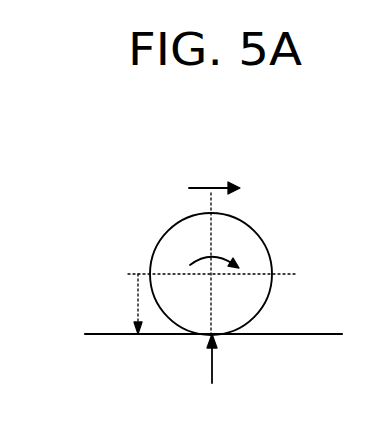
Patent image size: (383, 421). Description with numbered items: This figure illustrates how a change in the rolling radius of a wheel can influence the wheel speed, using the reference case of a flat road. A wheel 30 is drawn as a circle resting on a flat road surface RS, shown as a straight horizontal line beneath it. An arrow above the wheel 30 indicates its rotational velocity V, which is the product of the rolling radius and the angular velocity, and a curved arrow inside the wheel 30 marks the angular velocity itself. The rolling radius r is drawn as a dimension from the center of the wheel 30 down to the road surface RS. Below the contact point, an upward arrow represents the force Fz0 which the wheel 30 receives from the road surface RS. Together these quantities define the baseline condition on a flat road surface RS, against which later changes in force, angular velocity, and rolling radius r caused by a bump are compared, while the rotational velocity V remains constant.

The wheel 30 is at (165, 234).
The road surface RS is at (317, 333).
The rotational velocity V is at (207, 173).
The rolling radius r is at (130, 304).
The force received from the road surface Fz0 is at (233, 365).